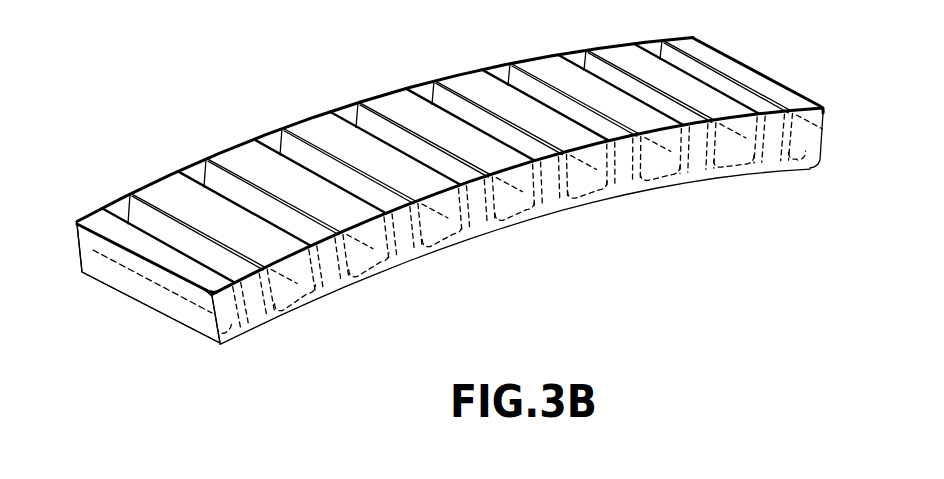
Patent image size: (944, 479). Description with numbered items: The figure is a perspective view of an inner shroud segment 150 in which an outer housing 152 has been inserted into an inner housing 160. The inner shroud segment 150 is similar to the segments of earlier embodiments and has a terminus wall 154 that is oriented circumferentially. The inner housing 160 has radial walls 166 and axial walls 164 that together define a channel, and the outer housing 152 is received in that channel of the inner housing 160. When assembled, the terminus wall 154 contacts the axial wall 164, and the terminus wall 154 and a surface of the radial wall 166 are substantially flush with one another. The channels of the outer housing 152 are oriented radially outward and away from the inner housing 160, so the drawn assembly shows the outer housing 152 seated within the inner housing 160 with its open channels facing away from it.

The inner shroud segment 150 is at (149, 124).
The outer housing 152 is at (236, 160).
The terminus wall 154 is at (96, 222).
The inner housing 160 is at (508, 210).
The axial wall 164 is at (88, 253).
The radial wall 166 is at (267, 282).